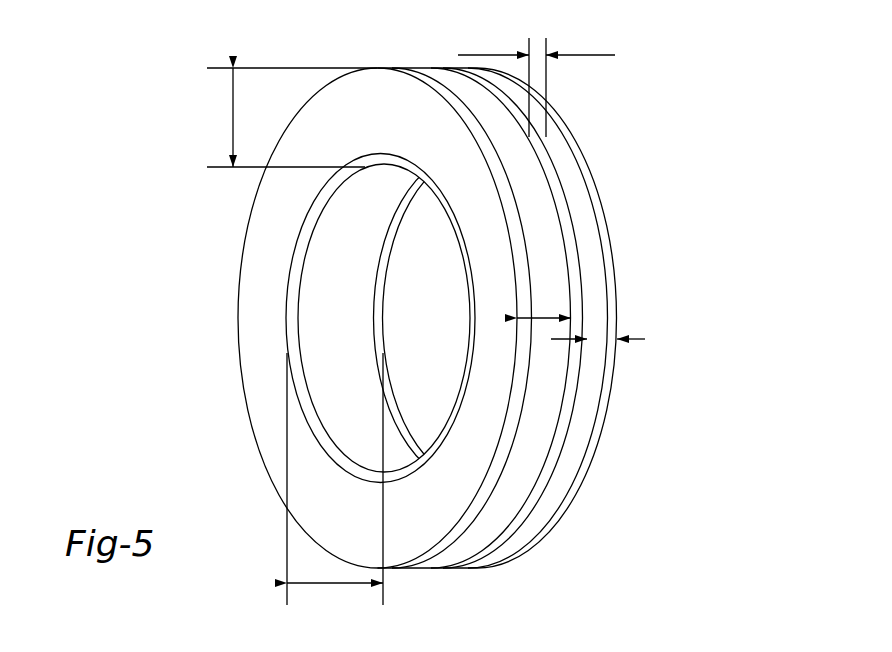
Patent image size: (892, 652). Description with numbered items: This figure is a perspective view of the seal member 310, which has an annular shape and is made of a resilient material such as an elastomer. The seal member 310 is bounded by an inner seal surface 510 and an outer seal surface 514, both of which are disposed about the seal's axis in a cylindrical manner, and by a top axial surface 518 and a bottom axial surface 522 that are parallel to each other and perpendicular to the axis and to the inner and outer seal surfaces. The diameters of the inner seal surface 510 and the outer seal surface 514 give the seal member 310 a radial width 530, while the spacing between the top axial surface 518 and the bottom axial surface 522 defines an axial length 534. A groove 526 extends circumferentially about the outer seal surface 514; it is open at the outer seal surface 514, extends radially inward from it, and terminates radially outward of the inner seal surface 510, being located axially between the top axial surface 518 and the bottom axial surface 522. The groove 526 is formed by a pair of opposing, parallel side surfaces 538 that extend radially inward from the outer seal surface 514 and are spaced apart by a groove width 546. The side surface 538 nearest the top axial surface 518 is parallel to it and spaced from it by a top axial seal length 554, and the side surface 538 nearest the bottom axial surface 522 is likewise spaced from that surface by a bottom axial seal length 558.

The seal member 310 is at (255, 397).
The inner seal surface 510 is at (313, 310).
The outer seal surface 514 is at (572, 495).
The top axial surface 518 is at (255, 232).
The bottom axial surface 522 is at (613, 262).
The groove 526 is at (572, 395).
The radial width 530 is at (233, 118).
The axial length 534 is at (334, 583).
The side surfaces 538 is at (575, 248).
The groove width 546 is at (615, 55).
The top axial seal length 554 is at (545, 318).
The bottom axial seal length 558 is at (645, 339).